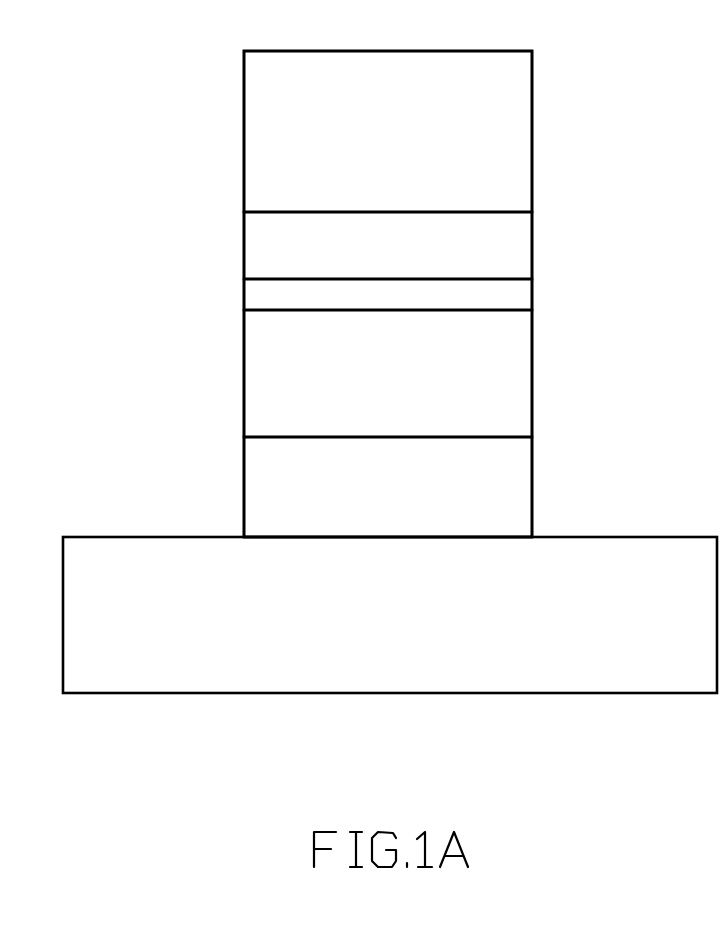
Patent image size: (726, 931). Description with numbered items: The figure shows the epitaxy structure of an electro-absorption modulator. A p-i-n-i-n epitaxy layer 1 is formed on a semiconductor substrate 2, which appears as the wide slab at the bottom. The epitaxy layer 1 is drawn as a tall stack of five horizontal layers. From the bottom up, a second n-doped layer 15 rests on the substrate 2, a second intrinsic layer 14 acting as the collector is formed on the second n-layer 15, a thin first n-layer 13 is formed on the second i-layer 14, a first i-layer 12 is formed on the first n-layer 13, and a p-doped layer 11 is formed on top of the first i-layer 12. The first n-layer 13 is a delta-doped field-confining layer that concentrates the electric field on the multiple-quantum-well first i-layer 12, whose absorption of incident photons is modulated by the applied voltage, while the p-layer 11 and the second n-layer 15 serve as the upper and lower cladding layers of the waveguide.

The p-i-n-i-n epitaxy layer 1 is at (228, 178).
The semiconductor substrate 2 is at (657, 551).
The p-doped layer 11 is at (518, 133).
The first i-layer 12 is at (255, 250).
The first n-layer 13 is at (523, 302).
The second i-layer 14 is at (518, 393).
The second n-doped layer 15 is at (257, 490).